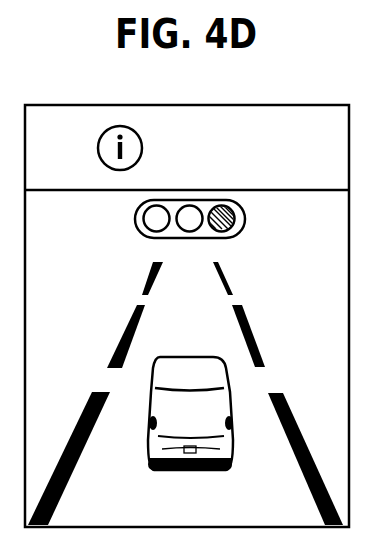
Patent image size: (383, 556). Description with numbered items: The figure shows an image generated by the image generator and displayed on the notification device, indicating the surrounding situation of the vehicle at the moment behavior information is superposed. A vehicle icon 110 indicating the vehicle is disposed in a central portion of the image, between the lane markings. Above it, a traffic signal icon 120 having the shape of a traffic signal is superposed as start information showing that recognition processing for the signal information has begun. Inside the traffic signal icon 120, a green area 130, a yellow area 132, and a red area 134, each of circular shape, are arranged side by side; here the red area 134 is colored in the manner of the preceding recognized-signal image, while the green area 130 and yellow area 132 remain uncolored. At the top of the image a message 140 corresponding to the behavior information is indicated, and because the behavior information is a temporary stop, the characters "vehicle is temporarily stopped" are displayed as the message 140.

The vehicle icon 110 is at (147, 445).
The traffic signal icon 120 is at (174, 251).
The green area 130 is at (152, 238).
The yellow area 132 is at (180, 238).
The red area 134 is at (227, 238).
The message 140 is at (295, 178).